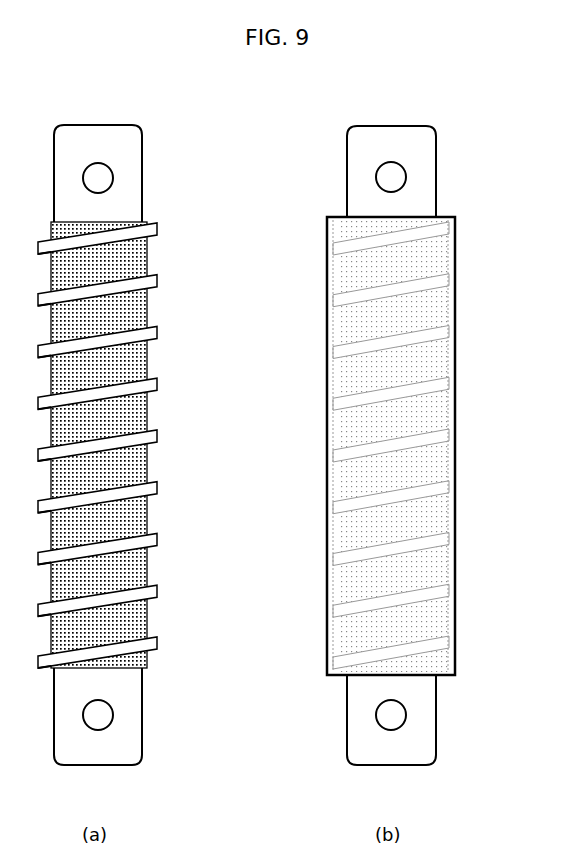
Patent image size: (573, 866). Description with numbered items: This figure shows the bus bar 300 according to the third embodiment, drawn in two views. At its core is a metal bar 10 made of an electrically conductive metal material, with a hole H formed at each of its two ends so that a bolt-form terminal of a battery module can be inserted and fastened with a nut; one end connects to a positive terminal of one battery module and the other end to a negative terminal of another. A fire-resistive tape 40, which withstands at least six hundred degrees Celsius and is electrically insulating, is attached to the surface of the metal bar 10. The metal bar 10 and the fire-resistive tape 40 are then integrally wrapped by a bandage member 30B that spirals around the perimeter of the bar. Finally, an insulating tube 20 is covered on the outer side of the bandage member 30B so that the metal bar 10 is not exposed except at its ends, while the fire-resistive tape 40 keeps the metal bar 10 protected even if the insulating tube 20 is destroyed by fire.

The bus bar 300 is at (471, 128).
The metal bar 10 is at (143, 203).
The hole H is at (98, 178).
The fire-resistive tape 40 is at (147, 247).
The bandage member 30B is at (157, 330).
The insulating tube 20 is at (456, 298).